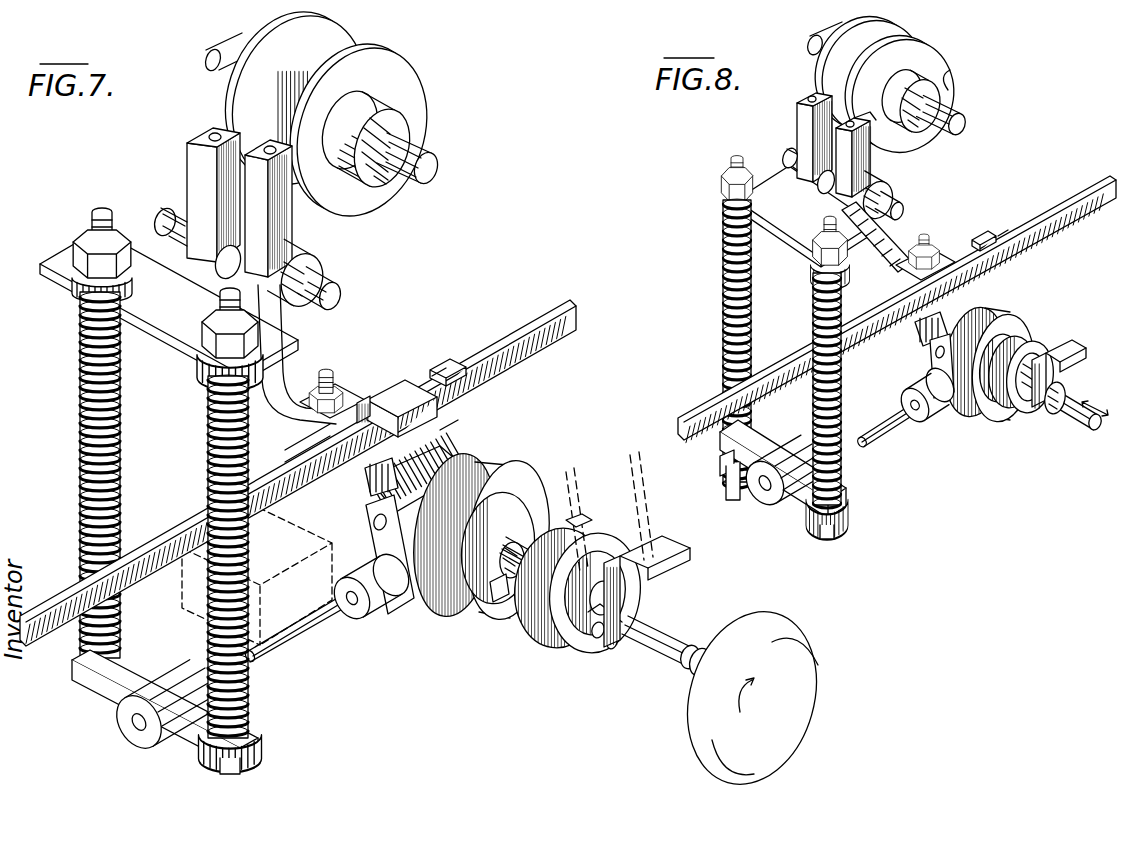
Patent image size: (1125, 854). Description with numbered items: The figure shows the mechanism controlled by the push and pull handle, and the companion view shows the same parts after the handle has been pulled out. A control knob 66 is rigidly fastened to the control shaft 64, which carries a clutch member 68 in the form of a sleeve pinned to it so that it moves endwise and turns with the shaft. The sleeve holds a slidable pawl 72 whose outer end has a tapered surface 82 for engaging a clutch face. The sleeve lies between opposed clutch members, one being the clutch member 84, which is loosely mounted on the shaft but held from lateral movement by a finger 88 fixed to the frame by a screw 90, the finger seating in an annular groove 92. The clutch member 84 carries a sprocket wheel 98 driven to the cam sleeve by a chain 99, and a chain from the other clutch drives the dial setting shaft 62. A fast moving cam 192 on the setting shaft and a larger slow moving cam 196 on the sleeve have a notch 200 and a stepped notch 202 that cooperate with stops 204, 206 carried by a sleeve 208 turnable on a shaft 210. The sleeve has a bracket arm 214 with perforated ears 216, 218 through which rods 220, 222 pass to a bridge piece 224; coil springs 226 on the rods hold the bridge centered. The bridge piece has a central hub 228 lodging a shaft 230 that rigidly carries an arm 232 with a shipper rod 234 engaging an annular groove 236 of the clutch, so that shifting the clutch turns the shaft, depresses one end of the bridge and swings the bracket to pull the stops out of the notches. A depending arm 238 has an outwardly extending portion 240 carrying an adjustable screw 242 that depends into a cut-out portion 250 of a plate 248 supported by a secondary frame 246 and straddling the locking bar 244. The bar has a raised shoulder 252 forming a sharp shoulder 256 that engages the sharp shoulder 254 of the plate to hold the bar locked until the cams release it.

In FIG. 7, the dial setting shaft 62 is at (436, 163).
In FIG. 8, the dial setting shaft 62 is at (967, 122).
In FIG. 7, the control shaft 64 is at (666, 645).
In FIG. 8, the control shaft 64 is at (1078, 430).
In FIG. 7, the control knob 66 is at (700, 726).
In FIG. 7, the clutch member 68 is at (456, 610).
In FIG. 8, the clutch member 68 is at (975, 414).
In FIG. 7, the pawl 72 is at (494, 602).
In FIG. 7, the tapered surface 82 is at (504, 606).
In FIG. 7, the clutch member 84 is at (552, 648).
In FIG. 8, the clutch member 84 is at (1024, 344).
In FIG. 7, the finger 88 is at (662, 566).
In FIG. 8, the finger 88 is at (1066, 350).
In FIG. 7, the screw 90 is at (578, 522).
In FIG. 7, the annular groove 92 is at (612, 656).
In FIG. 7, the sprocket wheel 98 is at (600, 664).
In FIG. 7, the chain 99 is at (650, 530).
In FIG. 7, the fast moving cam 192 is at (278, 29).
In FIG. 8, the fast moving cam 192 is at (900, 30).
In FIG. 7, the slow moving cam 196 is at (378, 46).
In FIG. 8, the slow moving cam 196 is at (934, 58).
In FIG. 7, the notch 200 is at (266, 150).
In FIG. 8, the notch 200 is at (852, 47).
In FIG. 7, the notch 202 is at (320, 150).
In FIG. 8, the notch 202 is at (952, 78).
In FIG. 7, the stop 204 is at (215, 130).
In FIG. 8, the stop 204 is at (822, 104).
In FIG. 7, the stop 206 is at (278, 214).
In FIG. 8, the stop 206 is at (870, 118).
In FIG. 7, the sleeve 208 is at (290, 266).
In FIG. 8, the sleeve 208 is at (882, 190).
In FIG. 7, the shaft 210 is at (322, 290).
In FIG. 8, the shaft 210 is at (902, 213).
In FIG. 7, the bracket arm 214 is at (165, 272).
In FIG. 8, the bracket arm 214 is at (805, 216).
In FIG. 7, the perforated ear 216 is at (70, 272).
In FIG. 8, the perforated ear 216 is at (724, 201).
In FIG. 7, the perforated ear 218 is at (212, 374).
In FIG. 8, the perforated ear 218 is at (842, 272).
In FIG. 7, the rod 220 is at (100, 220).
In FIG. 8, the rod 220 is at (724, 490).
In FIG. 7, the rod 222 is at (220, 300).
In FIG. 8, the rod 222 is at (838, 544).
In FIG. 7, the bridge piece 224 is at (192, 748).
In FIG. 8, the bridge piece 224 is at (800, 506).
In FIG. 7, the coil spring 226 is at (208, 452).
In FIG. 8, the coil spring 226 is at (812, 318).
In FIG. 7, the central hub 228 is at (172, 678).
In FIG. 8, the central hub 228 is at (781, 473).
In FIG. 7, the shaft 230 is at (284, 652).
In FIG. 8, the shaft 230 is at (866, 440).
In FIG. 7, the arm 232 is at (374, 624).
In FIG. 8, the arm 232 is at (904, 388).
In FIG. 7, the shipper rod 234 is at (504, 460).
In FIG. 8, the shipper rod 234 is at (1006, 322).
In FIG. 7, the annular groove 236 is at (470, 458).
In FIG. 8, the annular groove 236 is at (976, 318).
In FIG. 7, the depending arm 238 is at (282, 344).
In FIG. 8, the depending arm 238 is at (880, 236).
In FIG. 7, the outwardly extending portion 240 is at (348, 392).
In FIG. 8, the outwardly extending portion 240 is at (914, 262).
In FIG. 7, the adjustable screw 242 is at (330, 360).
In FIG. 7, the locking bar 244 is at (548, 320).
In FIG. 8, the locking bar 244 is at (1074, 204).
In FIG. 7, the secondary frame 246 is at (456, 428).
In FIG. 7, the plate 248 is at (402, 382).
In FIG. 7, the cut-out portion 250 is at (302, 457).
In FIG. 7, the raised shoulder 252 is at (450, 362).
In FIG. 8, the raised shoulder 252 is at (972, 248).
In FIG. 7, the sharp shoulder 254 is at (428, 370).
In FIG. 7, the sharp shoulder 256 is at (392, 394).
In FIG. 8, the sharp shoulder 256 is at (1002, 242).